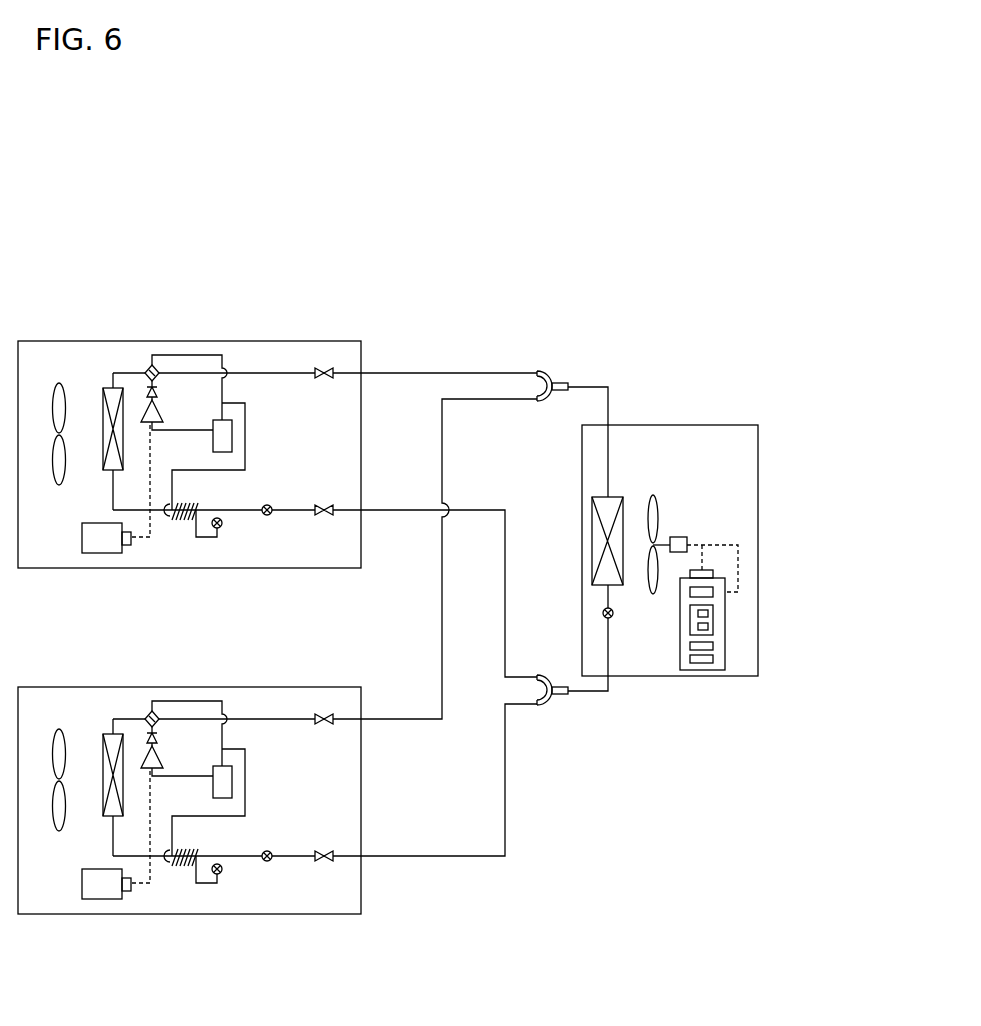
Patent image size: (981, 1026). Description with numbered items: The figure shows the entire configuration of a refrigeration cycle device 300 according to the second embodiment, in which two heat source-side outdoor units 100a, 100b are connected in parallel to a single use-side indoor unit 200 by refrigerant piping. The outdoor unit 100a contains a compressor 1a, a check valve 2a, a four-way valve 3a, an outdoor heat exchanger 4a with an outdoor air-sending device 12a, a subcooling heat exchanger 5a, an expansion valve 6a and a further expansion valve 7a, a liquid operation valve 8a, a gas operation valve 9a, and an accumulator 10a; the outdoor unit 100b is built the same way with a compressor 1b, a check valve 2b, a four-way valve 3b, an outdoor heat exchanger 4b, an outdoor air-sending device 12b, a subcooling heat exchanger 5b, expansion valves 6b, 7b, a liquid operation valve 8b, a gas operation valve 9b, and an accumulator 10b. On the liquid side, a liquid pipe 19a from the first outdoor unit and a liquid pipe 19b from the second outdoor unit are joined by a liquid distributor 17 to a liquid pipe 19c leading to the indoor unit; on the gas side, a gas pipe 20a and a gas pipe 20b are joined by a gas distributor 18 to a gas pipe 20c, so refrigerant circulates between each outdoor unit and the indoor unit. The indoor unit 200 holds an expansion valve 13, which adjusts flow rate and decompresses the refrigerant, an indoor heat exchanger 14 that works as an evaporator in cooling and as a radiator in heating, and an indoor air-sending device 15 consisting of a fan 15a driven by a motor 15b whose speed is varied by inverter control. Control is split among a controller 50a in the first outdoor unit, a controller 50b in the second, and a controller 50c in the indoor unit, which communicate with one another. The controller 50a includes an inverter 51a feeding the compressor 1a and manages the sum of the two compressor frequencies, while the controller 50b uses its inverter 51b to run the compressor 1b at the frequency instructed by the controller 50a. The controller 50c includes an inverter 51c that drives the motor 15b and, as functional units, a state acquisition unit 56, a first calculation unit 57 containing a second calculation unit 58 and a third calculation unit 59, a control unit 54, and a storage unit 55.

The refrigeration cycle device 300 is at (700, 314).
The outdoor unit 100a is at (285, 341).
The outdoor unit 100b is at (206, 788).
The indoor unit 200 is at (707, 425).
The compressor 1a is at (158, 405).
The compressor 1b is at (180, 704).
The check valve 2a is at (155, 389).
The check valve 2b is at (159, 694).
The four-way valve 3a is at (148, 366).
The four-way valve 3b is at (135, 674).
The outdoor heat exchanger 4a is at (106, 388).
The outdoor heat exchanger 4b is at (103, 729).
The subcooling heat exchanger 5a is at (185, 530).
The subcooling heat exchanger 5b is at (204, 902).
The expansion valve 6a is at (222, 528).
The expansion valve 6b is at (245, 905).
The expansion valve 7a is at (270, 516).
The expansion valve 7b is at (309, 903).
The liquid operation valve 8a is at (333, 510).
The liquid operation valve 8b is at (355, 829).
The gas operation valve 9a is at (332, 380).
The gas operation valve 9b is at (354, 745).
The accumulator 10a is at (232, 436).
The accumulator 10b is at (268, 778).
The outdoor air-sending device 12a is at (59, 383).
The outdoor air-sending device 12b is at (49, 730).
The expansion valve 13 is at (602, 611).
The indoor heat exchanger 14 is at (592, 535).
The indoor air-sending device 15 is at (690, 509).
The fan 15a is at (658, 495).
The motor 15b is at (686, 537).
The liquid distributor 17 is at (545, 675).
The gas distributor 18 is at (555, 394).
The liquid pipe 19a is at (480, 510).
The liquid pipe 19b is at (458, 856).
The liquid pipe 19c is at (598, 692).
The gas pipe 20a is at (455, 373).
The gas pipe 20b is at (408, 719).
The gas pipe 20c is at (583, 387).
The controller 50a is at (100, 553).
The controller 50b is at (98, 911).
The controller 50c is at (728, 663).
The inverter 51a is at (128, 546).
The inverter 51b is at (157, 913).
The inverter 51c is at (713, 570).
The control unit 54 is at (715, 647).
The storage unit 55 is at (690, 658).
The state acquisition unit 56 is at (713, 592).
The first calculation unit 57 is at (690, 617).
The second calculation unit 58 is at (708, 613).
The third calculation unit 59 is at (708, 627).